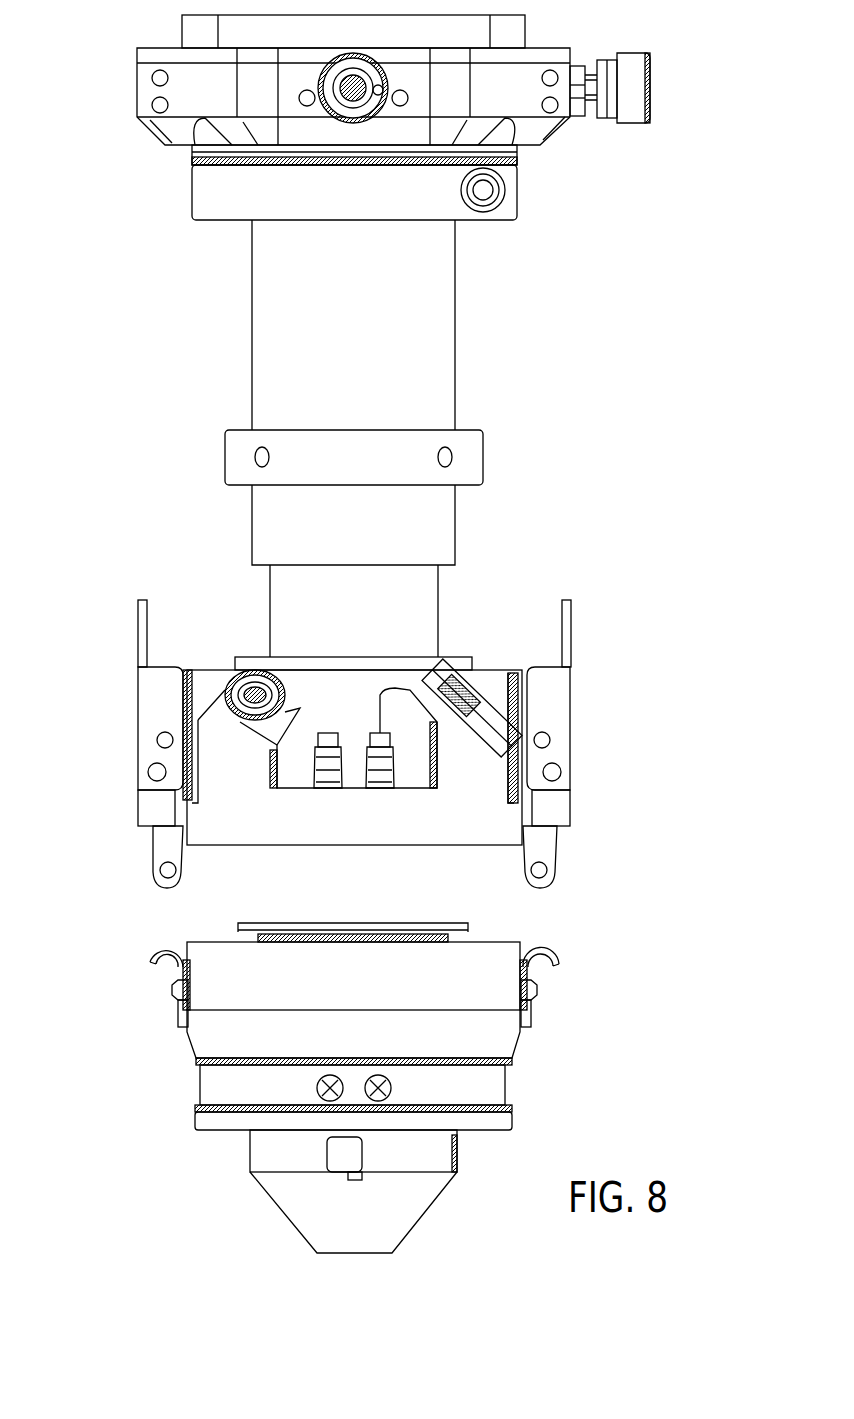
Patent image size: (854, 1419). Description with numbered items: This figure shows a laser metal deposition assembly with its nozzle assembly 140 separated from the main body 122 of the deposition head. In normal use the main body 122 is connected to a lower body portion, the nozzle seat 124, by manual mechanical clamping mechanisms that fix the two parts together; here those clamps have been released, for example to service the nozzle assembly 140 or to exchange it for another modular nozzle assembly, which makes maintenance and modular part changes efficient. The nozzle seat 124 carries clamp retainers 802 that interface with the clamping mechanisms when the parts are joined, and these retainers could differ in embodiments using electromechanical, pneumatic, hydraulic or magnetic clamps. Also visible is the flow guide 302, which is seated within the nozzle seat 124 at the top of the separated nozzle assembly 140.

The main body 122 is at (482, 810).
The nozzle seat 124 is at (485, 1038).
The nozzle assembly 140 is at (128, 1255).
The flow guide 302 is at (391, 923).
The clamp retainers 802 is at (541, 944).